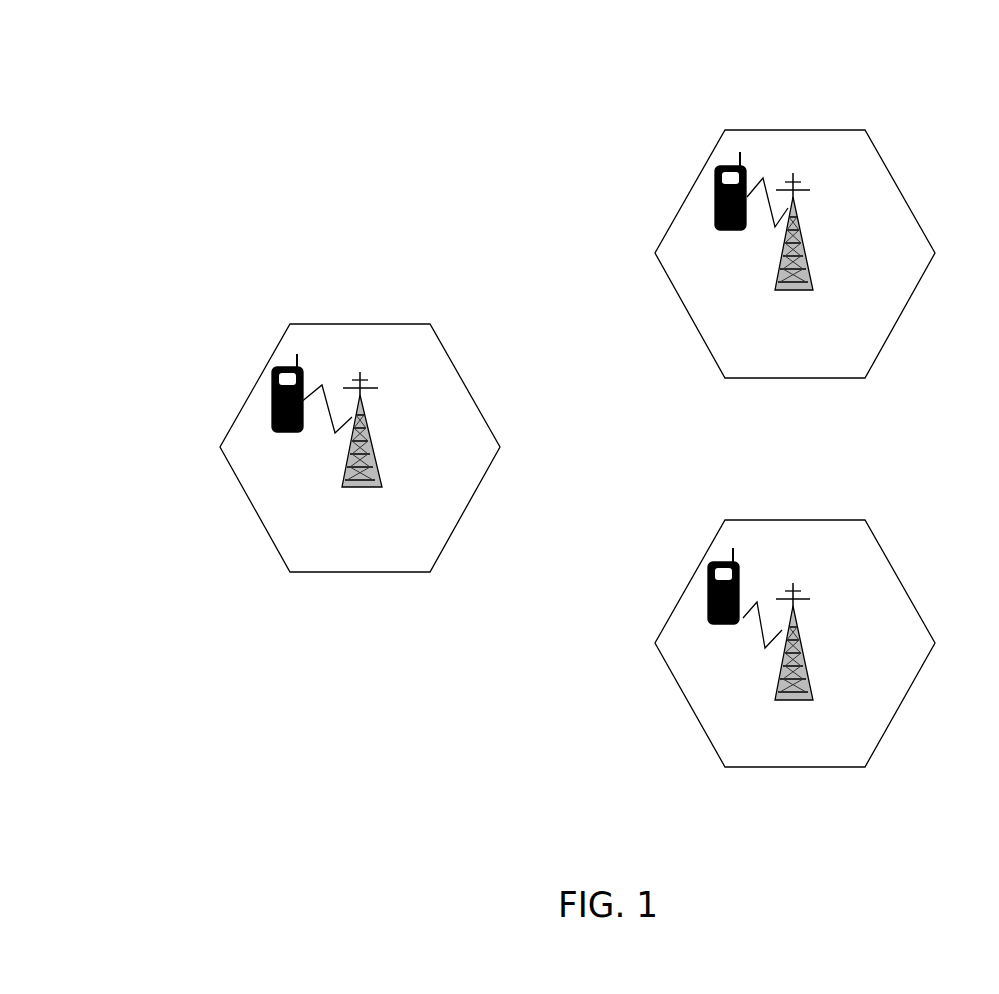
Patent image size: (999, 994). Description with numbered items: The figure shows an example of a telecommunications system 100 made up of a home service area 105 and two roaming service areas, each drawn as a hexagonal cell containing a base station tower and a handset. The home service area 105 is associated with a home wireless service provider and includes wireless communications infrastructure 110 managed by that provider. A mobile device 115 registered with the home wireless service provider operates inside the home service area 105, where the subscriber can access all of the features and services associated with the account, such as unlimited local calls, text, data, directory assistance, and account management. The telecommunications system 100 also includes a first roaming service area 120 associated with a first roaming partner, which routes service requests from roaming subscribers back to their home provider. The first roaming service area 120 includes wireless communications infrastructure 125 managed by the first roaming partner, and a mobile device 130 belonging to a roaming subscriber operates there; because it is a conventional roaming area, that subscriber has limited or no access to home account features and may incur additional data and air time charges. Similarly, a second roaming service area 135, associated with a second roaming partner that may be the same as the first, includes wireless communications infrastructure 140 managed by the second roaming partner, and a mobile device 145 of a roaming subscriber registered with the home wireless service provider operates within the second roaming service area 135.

The telecommunications system 100 is at (324, 134).
The home service area 105 is at (452, 362).
The wireless communications infrastructure 110 is at (370, 485).
The mobile device 115 is at (272, 378).
The first roaming service area 120 is at (882, 160).
The wireless communications infrastructure 125 is at (802, 287).
The mobile device 130 is at (715, 182).
The second roaming service area 135 is at (883, 553).
The wireless communications infrastructure 140 is at (805, 695).
The mobile device 145 is at (707, 580).